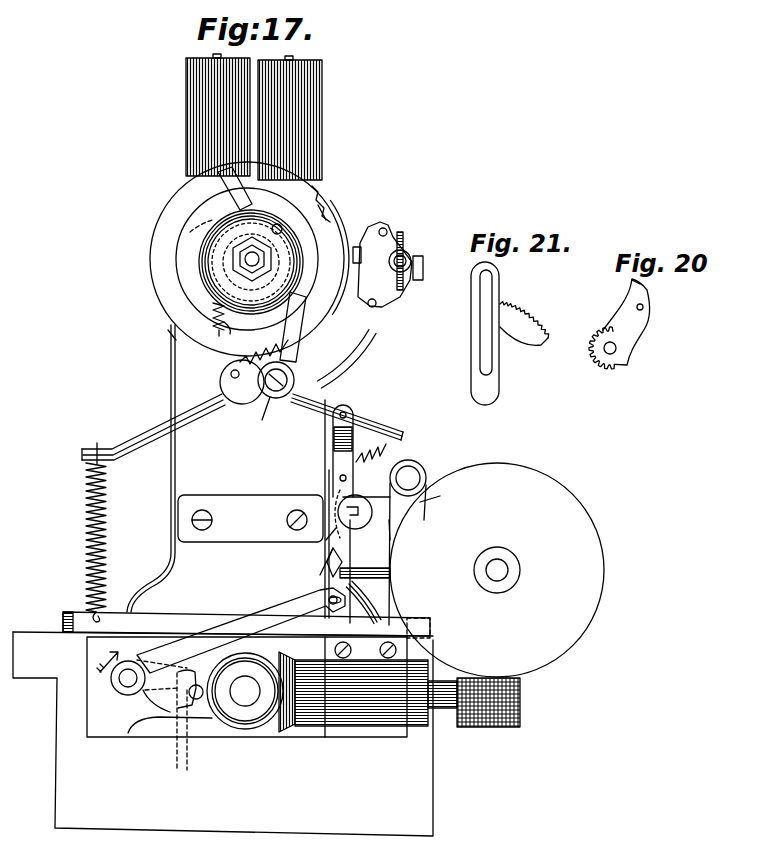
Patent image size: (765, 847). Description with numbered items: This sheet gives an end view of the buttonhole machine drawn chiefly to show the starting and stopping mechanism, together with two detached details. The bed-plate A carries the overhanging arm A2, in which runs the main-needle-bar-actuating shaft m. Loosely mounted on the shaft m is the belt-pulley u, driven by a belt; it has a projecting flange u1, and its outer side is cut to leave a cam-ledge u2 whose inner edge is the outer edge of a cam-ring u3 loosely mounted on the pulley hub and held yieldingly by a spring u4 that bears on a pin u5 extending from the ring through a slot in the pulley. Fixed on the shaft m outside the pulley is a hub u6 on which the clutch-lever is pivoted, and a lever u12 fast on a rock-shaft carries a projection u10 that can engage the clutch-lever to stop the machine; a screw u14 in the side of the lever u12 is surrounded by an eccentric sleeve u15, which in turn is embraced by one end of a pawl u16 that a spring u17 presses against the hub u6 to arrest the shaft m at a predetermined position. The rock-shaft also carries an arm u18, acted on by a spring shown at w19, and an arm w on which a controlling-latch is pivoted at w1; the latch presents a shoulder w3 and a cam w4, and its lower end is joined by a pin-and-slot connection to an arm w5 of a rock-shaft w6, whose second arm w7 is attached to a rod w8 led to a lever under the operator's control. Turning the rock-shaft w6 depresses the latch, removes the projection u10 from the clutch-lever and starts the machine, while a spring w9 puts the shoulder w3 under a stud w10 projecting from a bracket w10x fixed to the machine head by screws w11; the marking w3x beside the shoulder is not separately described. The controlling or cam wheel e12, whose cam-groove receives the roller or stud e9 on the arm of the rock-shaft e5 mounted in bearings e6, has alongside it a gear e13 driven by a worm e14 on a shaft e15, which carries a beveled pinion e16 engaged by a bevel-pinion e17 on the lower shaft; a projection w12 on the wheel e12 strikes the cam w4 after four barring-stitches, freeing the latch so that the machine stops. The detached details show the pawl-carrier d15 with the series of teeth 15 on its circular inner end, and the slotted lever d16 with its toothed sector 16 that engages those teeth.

In FIG. 17, the belt-pulley u is at (310, 172).
In FIG. 17, the projecting flange u1 is at (208, 245).
In FIG. 17, the cam-ledge u2 is at (205, 208).
In FIG. 17, the cam-ring u3 is at (218, 175).
In FIG. 17, the shoulder w3 is at (190, 232).
In FIG. 17, the pin u5 is at (283, 226).
In FIG. 17, the main-needle-bar-actuating shaft m is at (245, 259).
In FIG. 17, the spring u4 is at (213, 312).
In FIG. 17, the overhanging arm A2 is at (215, 333).
In FIG. 17, the hub u6 is at (320, 207).
In FIG. 17, the projection u10 is at (360, 246).
In FIG. 17, the lever u12 is at (370, 340).
In FIG. 17, the pawl u16 is at (325, 328).
In FIG. 17, the screw u14 is at (296, 376).
In FIG. 17, the spring u17 is at (232, 364).
In FIG. 17, the eccentric sleeve u15 is at (262, 420).
In FIG. 17, the arm u18 is at (156, 430).
In FIG. 17, the arm w is at (375, 420).
In FIG. 17, the pivot w1 is at (345, 412).
In FIG. 17, the spring w9 is at (388, 444).
In FIG. 17, the spring w19 is at (88, 522).
In FIG. 17, the bed-plate A is at (173, 612).
In FIG. 17, the bearings e6 is at (426, 468).
In FIG. 17, the rock-shaft e5 is at (440, 496).
In FIG. 17, the stud w10 is at (372, 508).
In FIG. 17, the bracket w10x is at (232, 495).
In FIG. 17, the screws w11 is at (212, 520).
In FIG. 17, the link w3x is at (326, 540).
In FIG. 17, the cam w4 is at (320, 575).
In FIG. 17, the projection w12 is at (360, 568).
In FIG. 17, the roller or stud e9 is at (394, 532).
In FIG. 17, the controlling or cam wheel e12 is at (588, 528).
In FIG. 17, the arm w5 is at (232, 615).
In FIG. 17, the rock-shaft w6 is at (120, 678).
In FIG. 17, the second arm w7 is at (160, 695).
In FIG. 17, the rod w8 is at (177, 748).
In FIG. 17, the gear e13 is at (246, 684).
In FIG. 17, the bevel-pinion e17 is at (255, 730).
In FIG. 17, the beveled pinion e16 is at (300, 735).
In FIG. 17, the shaft e15 is at (448, 708).
In FIG. 17, the worm e14 is at (520, 697).
In FIG. 21, the slotted lever d16 is at (478, 338).
In FIG. 21, the sector 16 is at (527, 335).
In FIG. 20, the pawl-carrier d15 is at (647, 288).
In FIG. 20, the teeth 15 is at (628, 364).